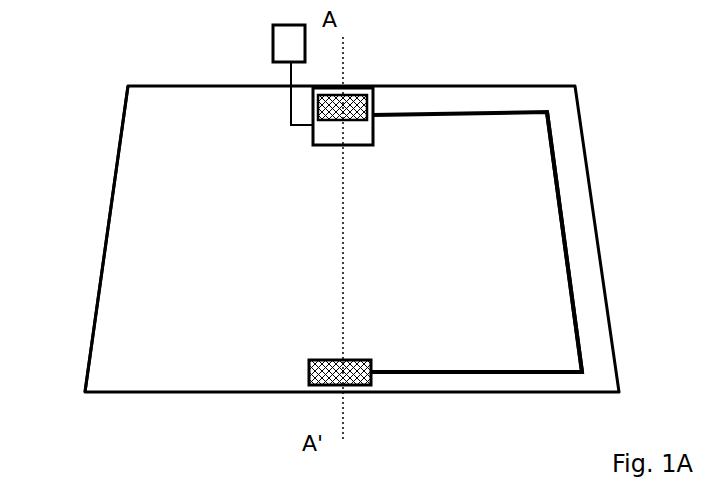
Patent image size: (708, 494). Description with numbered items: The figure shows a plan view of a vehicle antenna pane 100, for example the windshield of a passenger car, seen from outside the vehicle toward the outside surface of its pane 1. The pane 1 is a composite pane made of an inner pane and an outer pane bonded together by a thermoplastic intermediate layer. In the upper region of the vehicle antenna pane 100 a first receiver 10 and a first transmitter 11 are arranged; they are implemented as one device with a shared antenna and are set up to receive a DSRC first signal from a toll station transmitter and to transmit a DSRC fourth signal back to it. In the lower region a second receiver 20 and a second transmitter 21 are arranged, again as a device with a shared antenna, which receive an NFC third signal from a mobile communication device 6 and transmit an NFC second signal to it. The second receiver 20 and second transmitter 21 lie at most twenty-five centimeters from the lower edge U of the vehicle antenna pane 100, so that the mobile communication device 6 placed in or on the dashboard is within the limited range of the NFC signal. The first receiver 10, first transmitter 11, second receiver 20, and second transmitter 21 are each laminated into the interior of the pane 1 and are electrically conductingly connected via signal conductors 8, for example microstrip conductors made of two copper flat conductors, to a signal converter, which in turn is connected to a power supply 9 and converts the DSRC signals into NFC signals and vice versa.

The vehicle antenna pane 100 is at (122, 75).
The pane 1 is at (143, 148).
The power supply 9 is at (293, 75).
The mobile communication device 6 is at (381, 110).
The signal conductors 8 is at (560, 197).
The first receiver 10 is at (378, 87).
The first transmitter 11 is at (373, 88).
The second receiver 20 is at (368, 396).
The second transmitter 21 is at (363, 383).
The lower edge U is at (200, 396).